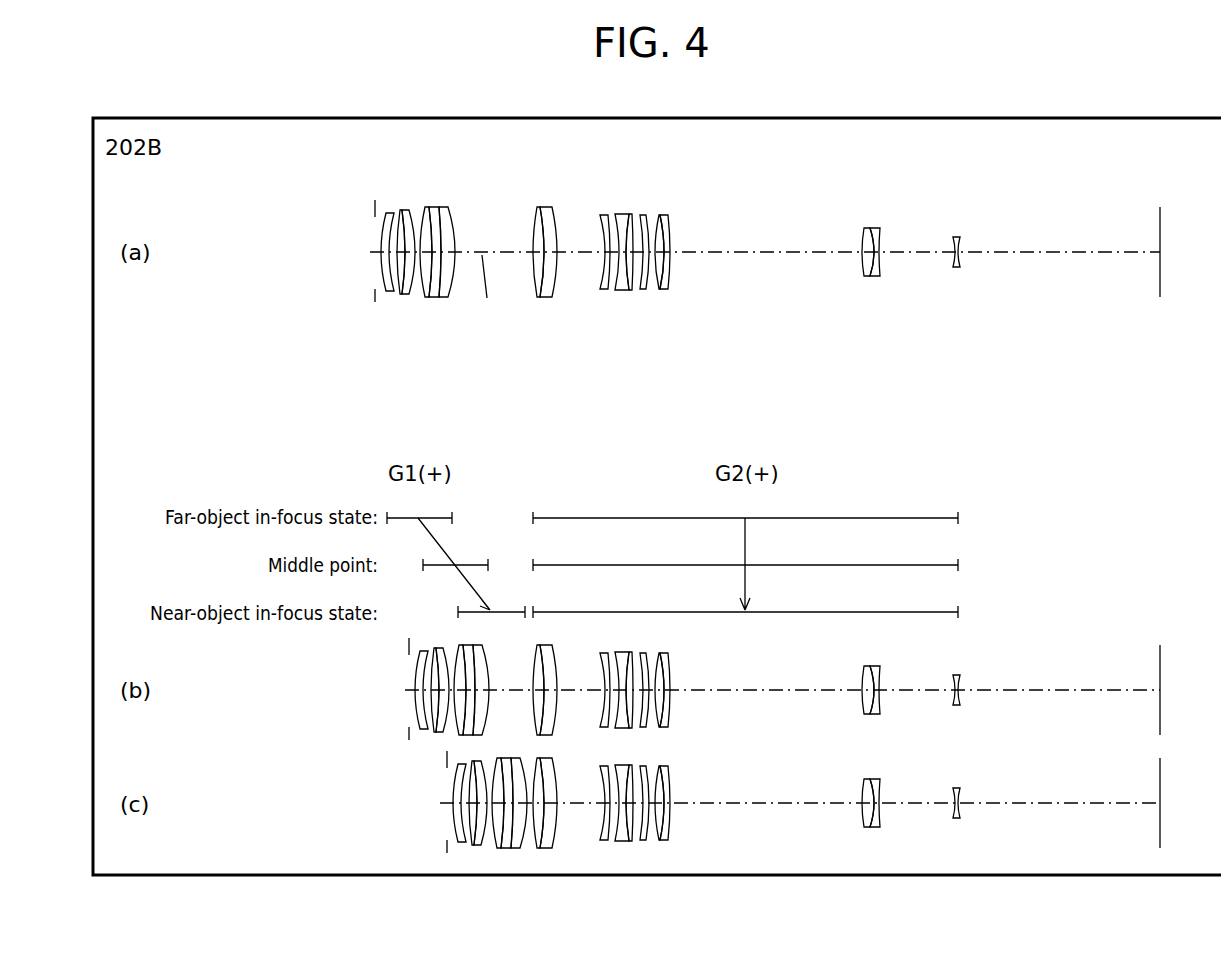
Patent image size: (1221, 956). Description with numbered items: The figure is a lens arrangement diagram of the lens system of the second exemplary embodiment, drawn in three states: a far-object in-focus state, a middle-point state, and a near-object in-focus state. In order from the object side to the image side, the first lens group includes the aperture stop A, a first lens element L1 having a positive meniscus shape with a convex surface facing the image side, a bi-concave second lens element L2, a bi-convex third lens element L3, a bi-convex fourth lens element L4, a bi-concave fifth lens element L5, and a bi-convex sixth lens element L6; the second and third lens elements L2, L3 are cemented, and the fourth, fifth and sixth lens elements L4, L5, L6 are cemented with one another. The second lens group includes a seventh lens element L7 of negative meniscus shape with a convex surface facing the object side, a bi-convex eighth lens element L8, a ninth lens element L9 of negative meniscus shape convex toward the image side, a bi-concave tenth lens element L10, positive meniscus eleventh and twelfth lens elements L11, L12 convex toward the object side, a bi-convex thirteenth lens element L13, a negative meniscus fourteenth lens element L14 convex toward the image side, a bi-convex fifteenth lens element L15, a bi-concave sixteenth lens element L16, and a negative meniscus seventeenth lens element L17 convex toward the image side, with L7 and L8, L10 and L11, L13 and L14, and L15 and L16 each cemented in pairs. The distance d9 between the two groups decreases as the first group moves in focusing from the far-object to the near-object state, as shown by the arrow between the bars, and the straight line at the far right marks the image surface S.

The aperture stop A is at (374, 210).
The first lens element L1 is at (384, 212).
The second lens element L2 is at (400, 210).
The third lens element L3 is at (408, 220).
The fourth lens element L4 is at (427, 210).
The fifth lens element L5 is at (437, 213).
The sixth lens element L6 is at (448, 235).
The seventh lens element L7 is at (542, 208).
The eighth lens element L8 is at (552, 213).
The ninth lens element L9 is at (603, 218).
The tenth lens element L10 is at (620, 215).
The eleventh lens element L11 is at (632, 213).
The twelfth lens element L12 is at (643, 215).
The thirteenth lens element L13 is at (663, 225).
The fourteenth lens element L14 is at (668, 237).
The fifteenth lens element L15 is at (868, 230).
The sixteenth lens element L16 is at (878, 233).
The seventeenth lens element L17 is at (957, 238).
The distance d9 is at (484, 293).
The image surface S is at (1162, 230).